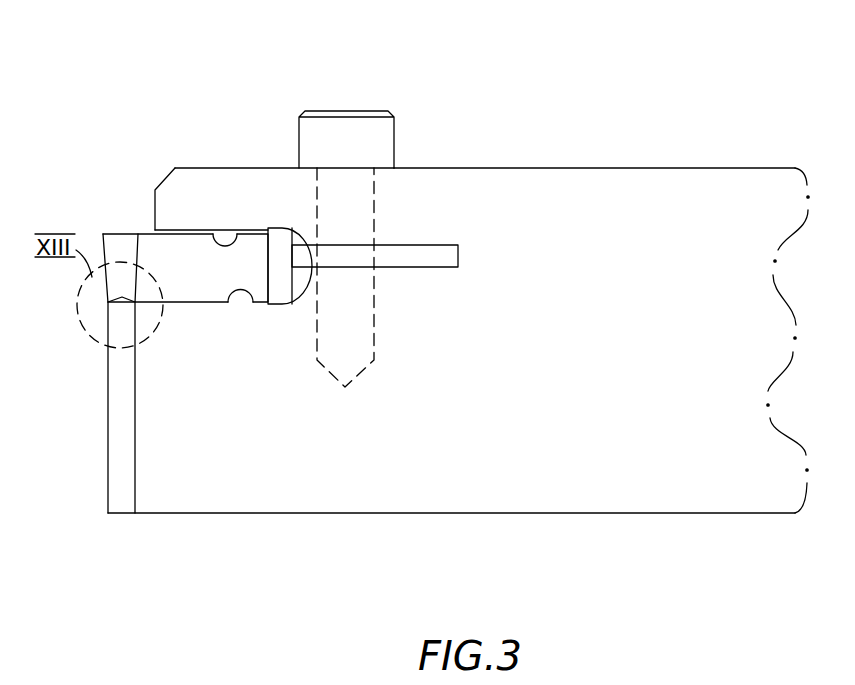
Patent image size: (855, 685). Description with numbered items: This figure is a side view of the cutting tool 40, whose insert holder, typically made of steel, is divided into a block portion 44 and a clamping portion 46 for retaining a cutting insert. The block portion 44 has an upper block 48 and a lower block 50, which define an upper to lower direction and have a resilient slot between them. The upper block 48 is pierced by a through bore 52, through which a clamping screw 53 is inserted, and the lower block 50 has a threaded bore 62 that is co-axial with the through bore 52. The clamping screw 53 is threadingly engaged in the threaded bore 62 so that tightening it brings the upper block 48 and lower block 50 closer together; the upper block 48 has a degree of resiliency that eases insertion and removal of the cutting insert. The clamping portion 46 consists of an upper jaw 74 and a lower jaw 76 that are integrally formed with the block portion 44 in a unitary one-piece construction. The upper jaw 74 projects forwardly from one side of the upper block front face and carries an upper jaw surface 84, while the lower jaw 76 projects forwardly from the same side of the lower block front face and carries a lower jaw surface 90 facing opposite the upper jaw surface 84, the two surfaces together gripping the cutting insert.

The cutting tool 40 is at (587, 93).
The block portion 44 is at (442, 157).
The clamping portion 46 is at (253, 113).
The upper block 48 is at (408, 167).
The lower block 50 is at (352, 514).
The through bore 52 is at (375, 213).
The clamping screw 53 is at (348, 110).
The threaded bore 62 is at (375, 315).
The upper jaw 74 is at (230, 150).
The lower jaw 76 is at (100, 389).
The upper jaw surface 84 is at (210, 232).
The lower jaw surface 90 is at (227, 305).